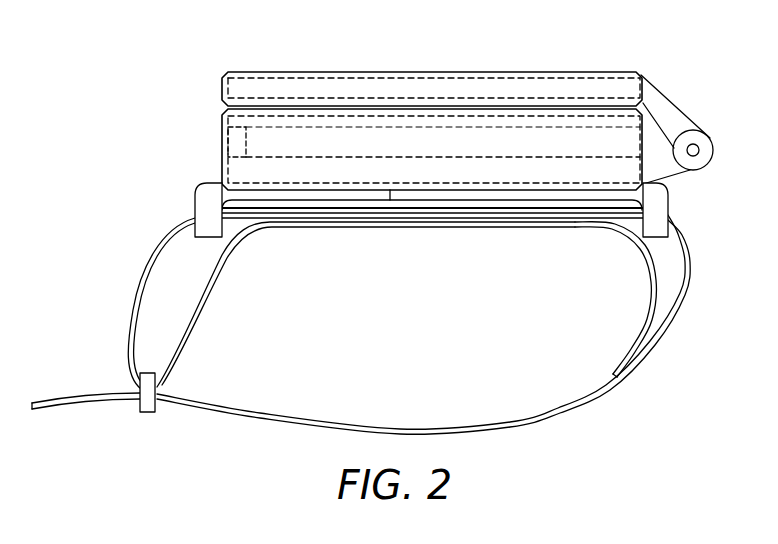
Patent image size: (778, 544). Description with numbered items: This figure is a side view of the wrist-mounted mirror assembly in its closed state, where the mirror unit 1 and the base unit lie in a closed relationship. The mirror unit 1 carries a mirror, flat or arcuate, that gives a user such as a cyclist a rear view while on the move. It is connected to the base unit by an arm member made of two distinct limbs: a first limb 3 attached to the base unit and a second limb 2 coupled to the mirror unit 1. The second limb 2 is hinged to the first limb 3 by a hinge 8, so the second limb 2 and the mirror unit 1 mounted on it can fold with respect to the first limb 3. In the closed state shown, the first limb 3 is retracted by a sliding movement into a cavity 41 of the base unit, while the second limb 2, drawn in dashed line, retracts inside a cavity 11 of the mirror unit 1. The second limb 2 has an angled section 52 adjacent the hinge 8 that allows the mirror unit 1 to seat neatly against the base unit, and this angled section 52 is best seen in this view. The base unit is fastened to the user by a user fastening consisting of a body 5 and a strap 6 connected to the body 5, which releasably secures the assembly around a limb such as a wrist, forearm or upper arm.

The mirror unit 1 is at (311, 72).
The second limb 2 is at (463, 86).
The cavity 11 is at (576, 75).
The cavity 41 is at (222, 170).
The first limb 3 is at (230, 135).
The body 5 is at (202, 204).
The angled section 52 is at (668, 112).
The hinge 8 is at (700, 151).
The strap 6 is at (544, 420).